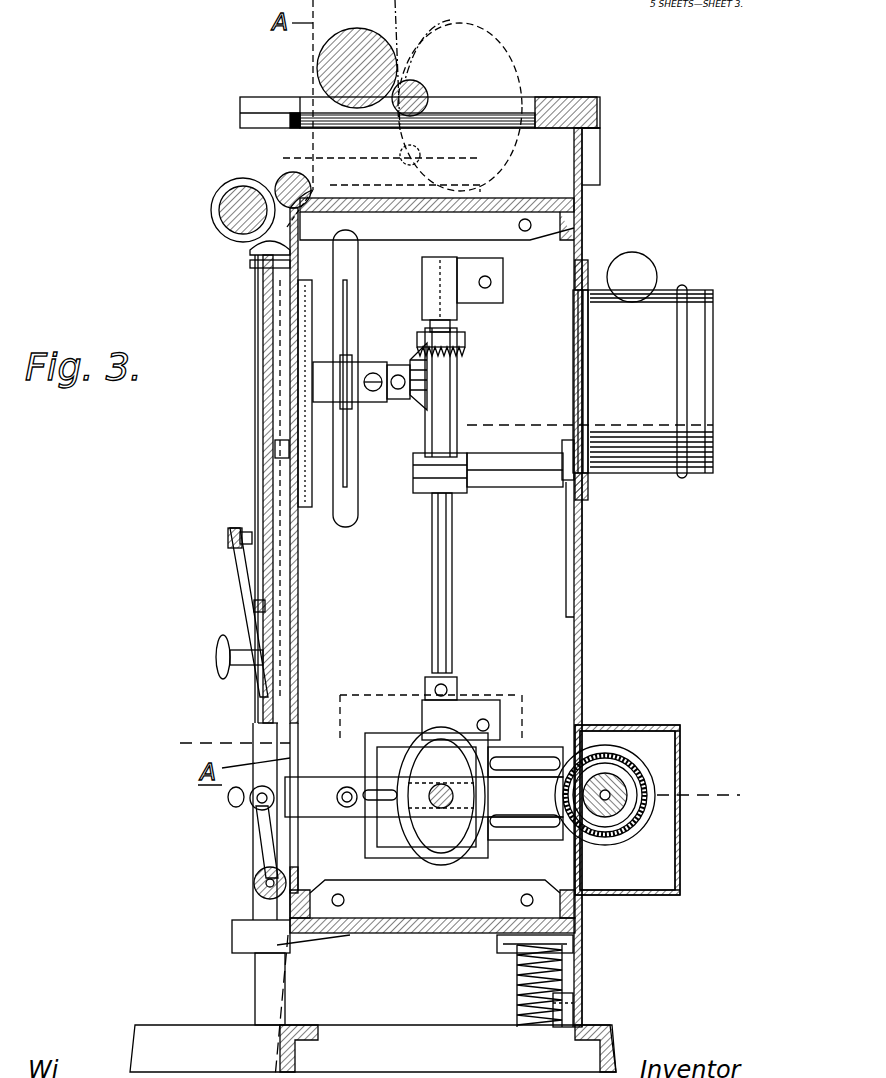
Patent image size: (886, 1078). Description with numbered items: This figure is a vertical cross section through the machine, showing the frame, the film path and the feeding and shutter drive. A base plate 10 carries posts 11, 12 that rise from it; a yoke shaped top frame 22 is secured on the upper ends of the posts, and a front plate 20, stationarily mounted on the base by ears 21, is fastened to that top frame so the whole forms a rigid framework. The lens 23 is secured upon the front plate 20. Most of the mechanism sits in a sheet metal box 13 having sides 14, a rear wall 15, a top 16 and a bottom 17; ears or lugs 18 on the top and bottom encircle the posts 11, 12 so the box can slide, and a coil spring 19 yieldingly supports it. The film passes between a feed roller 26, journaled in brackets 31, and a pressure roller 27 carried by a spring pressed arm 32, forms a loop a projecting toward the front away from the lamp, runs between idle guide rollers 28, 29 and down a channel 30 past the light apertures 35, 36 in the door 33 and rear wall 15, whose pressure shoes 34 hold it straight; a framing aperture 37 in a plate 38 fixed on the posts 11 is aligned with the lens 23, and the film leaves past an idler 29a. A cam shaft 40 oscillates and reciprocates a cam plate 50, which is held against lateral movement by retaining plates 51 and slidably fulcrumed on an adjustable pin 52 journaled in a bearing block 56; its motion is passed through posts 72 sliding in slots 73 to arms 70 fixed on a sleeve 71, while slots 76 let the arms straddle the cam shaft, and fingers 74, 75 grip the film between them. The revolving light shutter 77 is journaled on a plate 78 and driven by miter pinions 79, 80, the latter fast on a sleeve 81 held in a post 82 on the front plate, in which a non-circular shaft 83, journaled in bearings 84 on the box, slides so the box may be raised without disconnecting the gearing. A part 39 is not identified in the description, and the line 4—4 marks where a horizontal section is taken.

The base plate 10 is at (373, 1048).
The post 11 is at (358, 433).
The post 12 is at (582, 963).
The box 13 is at (590, 649).
The sheet metal sides 14 is at (548, 634).
The rear wall 15 is at (299, 645).
The top 16 is at (583, 212).
The bottom 17 is at (415, 935).
The ears or lugs 18 is at (232, 932).
The coil spring 19 is at (520, 983).
The front plate 20 is at (583, 551).
The ears 21 is at (562, 1020).
The yoke shaped top frame 22 is at (598, 116).
The lens 23 is at (643, 376).
The feed roller 26 is at (357, 32).
The pressure roller 27 is at (425, 92).
The idle guide roller 28 is at (216, 206).
The idle guide roller 29 is at (280, 178).
The idler 29a is at (254, 884).
The channel or guideway 30 is at (300, 590).
The brackets 31 is at (330, 143).
The arm 32 is at (430, 65).
The door 33 is at (254, 582).
The pressure shoes 34 is at (280, 498).
The light aperture 35 is at (263, 350).
The light aperture 36 is at (298, 452).
The framing aperture 37 is at (300, 388).
The plate 38 is at (355, 268).
The plate 39 is at (251, 393).
The cam shaft 40 is at (441, 805).
The cam plate 50 is at (388, 727).
The retaining plates 51 is at (385, 832).
The pin 52 is at (612, 790).
The bearing block 56 is at (612, 790).
The oscillatory arms 70 is at (360, 767).
The sleeve 71 is at (620, 833).
The posts 72 is at (347, 788).
The slots 73 is at (362, 808).
The fingers 74 is at (255, 812).
The fingers 75 is at (300, 825).
The slots 76 is at (450, 860).
The light shutter 77 is at (348, 480).
The plate 78 is at (312, 470).
The miter pinion 79 is at (413, 405).
The miter pinion 80 is at (466, 340).
The sleeve 81 is at (460, 425).
The post 82 is at (513, 490).
The non-circular shaft 83 is at (453, 568).
The bearings 84 is at (430, 290).
The loop a is at (522, 62).
The section line 4— 4 is at (128, 756).